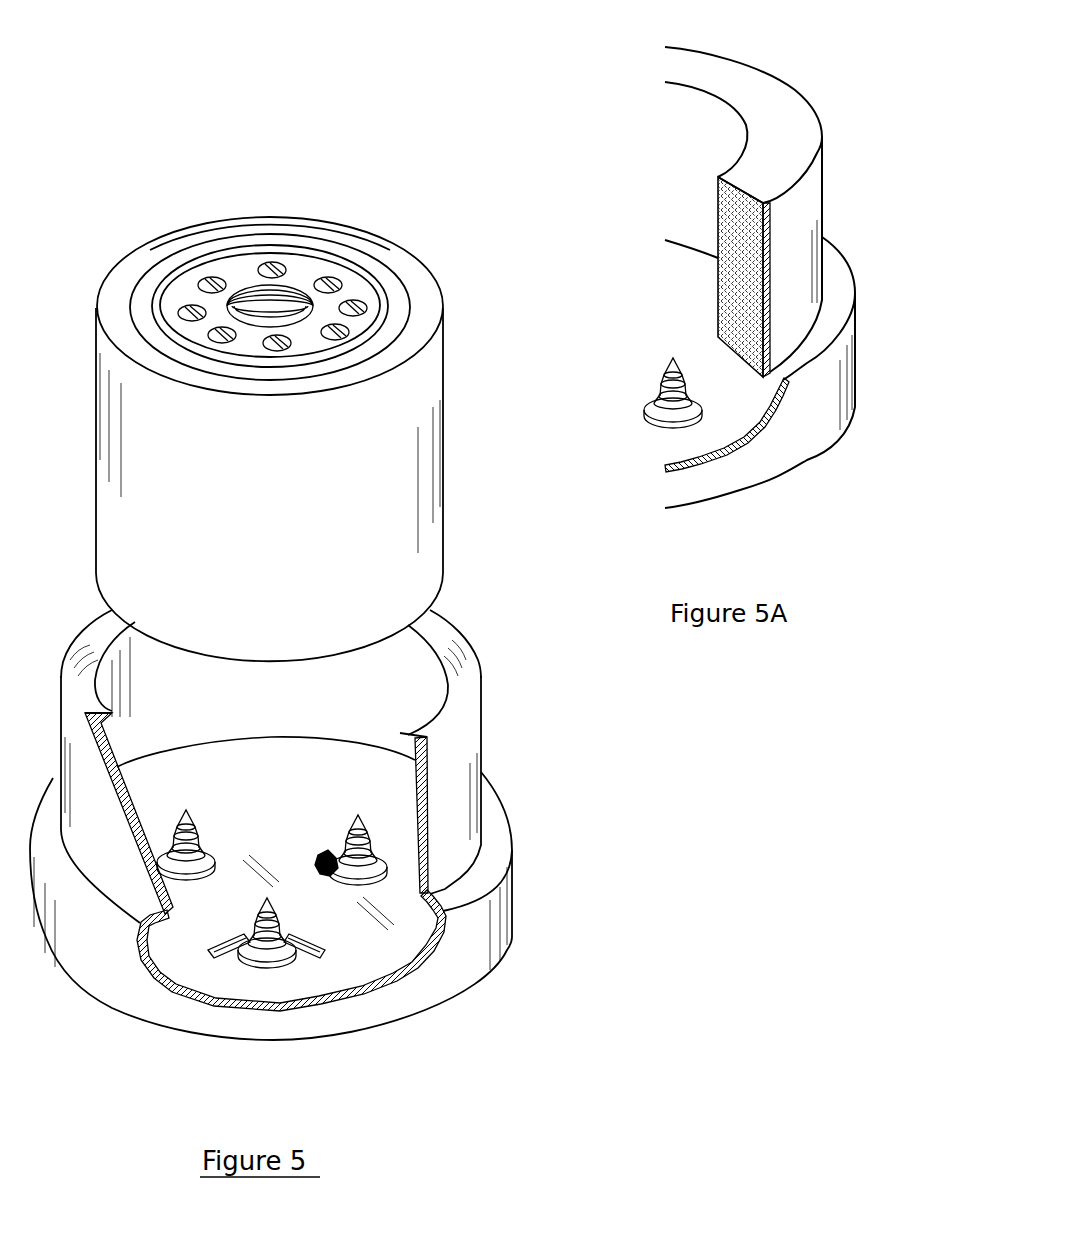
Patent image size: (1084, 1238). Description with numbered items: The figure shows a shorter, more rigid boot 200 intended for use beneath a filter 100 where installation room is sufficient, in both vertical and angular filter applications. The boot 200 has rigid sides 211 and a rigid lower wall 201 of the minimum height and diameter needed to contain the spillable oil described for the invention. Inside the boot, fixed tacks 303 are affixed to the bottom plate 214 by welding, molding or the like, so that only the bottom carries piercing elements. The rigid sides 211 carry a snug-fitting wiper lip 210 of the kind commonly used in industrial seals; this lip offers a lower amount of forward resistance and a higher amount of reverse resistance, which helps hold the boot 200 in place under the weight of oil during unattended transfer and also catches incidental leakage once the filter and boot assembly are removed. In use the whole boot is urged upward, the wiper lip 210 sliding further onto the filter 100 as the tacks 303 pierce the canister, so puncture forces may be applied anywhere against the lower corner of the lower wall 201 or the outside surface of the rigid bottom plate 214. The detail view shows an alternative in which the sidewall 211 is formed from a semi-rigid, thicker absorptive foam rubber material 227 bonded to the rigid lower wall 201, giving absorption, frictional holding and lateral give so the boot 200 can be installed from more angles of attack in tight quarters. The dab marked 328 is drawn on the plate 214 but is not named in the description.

In FIG. 5, the filter 100 is at (165, 200).
In FIG. 5, the boot 200 is at (540, 803).
In FIG. 5, the lower wall 201 is at (455, 968).
In FIG. 5A, the lower wall 201 is at (780, 433).
In FIG. 5, the wiper lip 210 is at (441, 626).
In FIG. 5A, the wiper lip 210 is at (778, 93).
In FIG. 5, the rigid sides 211 is at (457, 736).
In FIG. 5A, the rigid sides 211 is at (797, 208).
In FIG. 5, the plate 214 is at (360, 967).
In FIG. 5A, the absorptive foam rubber material 227 is at (737, 225).
In FIG. 5, the fixed tacks 303 is at (262, 942).
In FIG. 5, the adhesive dab 328 is at (317, 950).